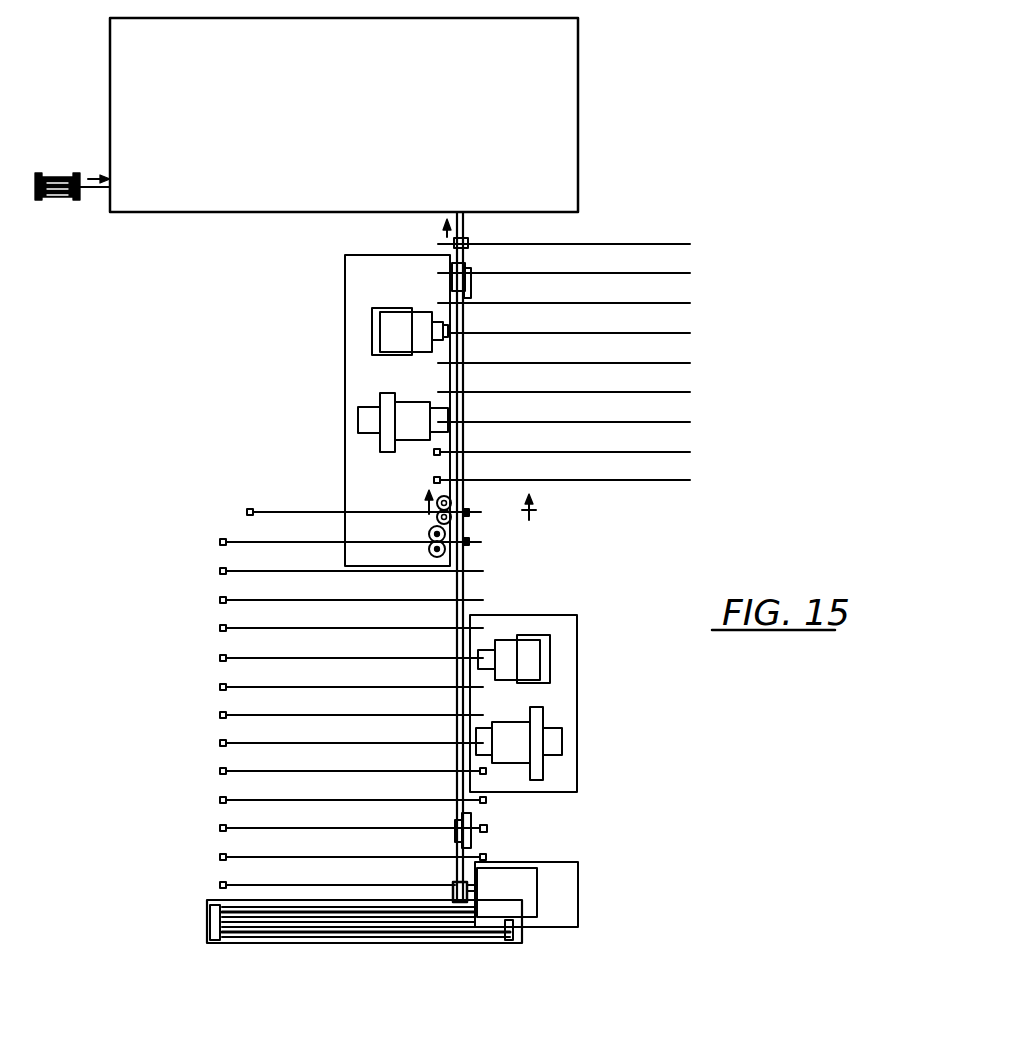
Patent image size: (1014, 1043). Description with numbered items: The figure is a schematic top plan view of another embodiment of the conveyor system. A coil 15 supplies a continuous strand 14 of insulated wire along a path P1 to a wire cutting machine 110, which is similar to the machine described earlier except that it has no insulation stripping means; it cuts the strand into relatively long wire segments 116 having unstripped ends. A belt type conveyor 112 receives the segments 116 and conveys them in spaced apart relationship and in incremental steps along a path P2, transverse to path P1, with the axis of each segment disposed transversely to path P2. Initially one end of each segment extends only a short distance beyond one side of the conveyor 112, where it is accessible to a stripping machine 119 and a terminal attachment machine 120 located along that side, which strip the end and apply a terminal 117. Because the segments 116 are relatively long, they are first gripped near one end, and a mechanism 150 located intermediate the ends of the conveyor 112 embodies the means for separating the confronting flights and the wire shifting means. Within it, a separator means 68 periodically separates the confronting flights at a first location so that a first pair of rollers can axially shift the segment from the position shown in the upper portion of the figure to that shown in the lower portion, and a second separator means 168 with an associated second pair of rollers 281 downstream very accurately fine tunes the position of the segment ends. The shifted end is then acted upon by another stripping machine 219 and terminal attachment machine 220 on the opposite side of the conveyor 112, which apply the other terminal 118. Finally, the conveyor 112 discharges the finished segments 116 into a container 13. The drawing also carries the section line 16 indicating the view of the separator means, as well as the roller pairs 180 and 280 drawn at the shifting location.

The wire cutting machine 110 is at (583, 180).
The coil 15 is at (65, 201).
The continuous strand 14 is at (97, 191).
The path P1 is at (93, 177).
The path P2 is at (446, 228).
The belt type conveyor 112 is at (470, 598).
The wire segments 116 is at (659, 243).
The terminal 117 is at (433, 454).
The terminal 118 is at (489, 828).
The stripping machine 119 is at (418, 339).
The terminal attachment machine 120 is at (412, 407).
The mechanism 150 is at (378, 523).
The roller pair 180 is at (448, 498).
The roller 280 is at (437, 558).
The second pair of rollers 281 is at (430, 552).
The separator means 68 is at (481, 518).
The second separator means 168 is at (481, 546).
The section line 16- 16 is at (482, 500).
The stripping machine 219 is at (530, 666).
The terminal attachment machine 220 is at (535, 735).
The container 13 is at (512, 945).